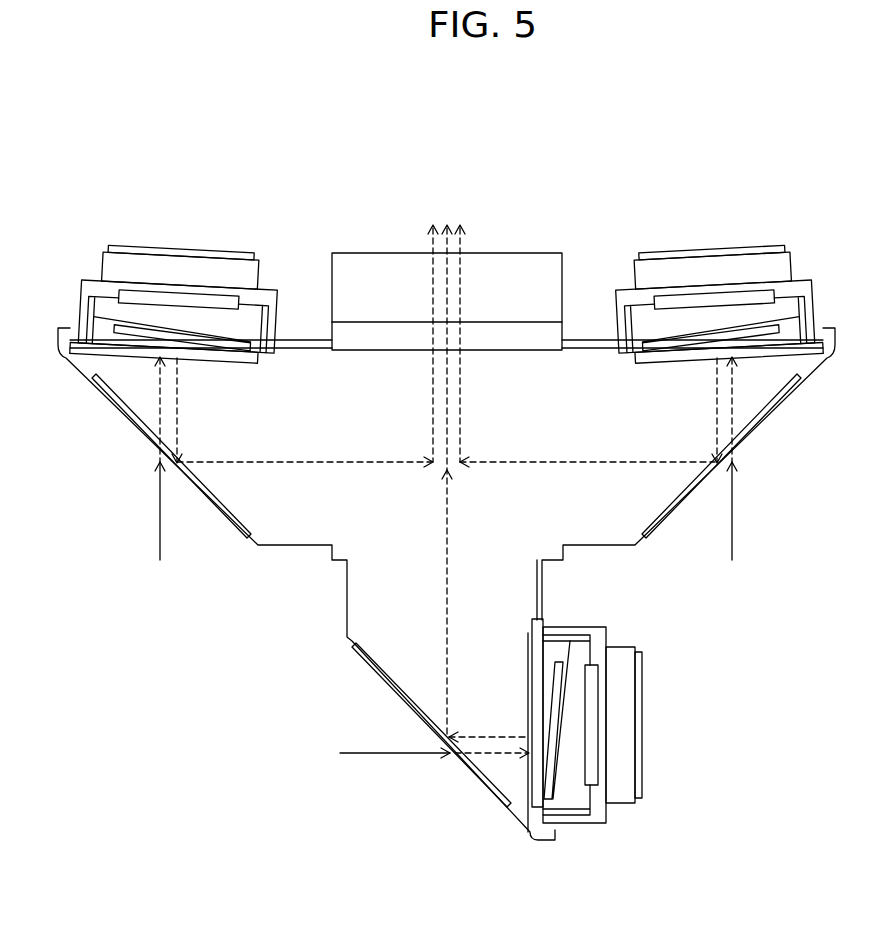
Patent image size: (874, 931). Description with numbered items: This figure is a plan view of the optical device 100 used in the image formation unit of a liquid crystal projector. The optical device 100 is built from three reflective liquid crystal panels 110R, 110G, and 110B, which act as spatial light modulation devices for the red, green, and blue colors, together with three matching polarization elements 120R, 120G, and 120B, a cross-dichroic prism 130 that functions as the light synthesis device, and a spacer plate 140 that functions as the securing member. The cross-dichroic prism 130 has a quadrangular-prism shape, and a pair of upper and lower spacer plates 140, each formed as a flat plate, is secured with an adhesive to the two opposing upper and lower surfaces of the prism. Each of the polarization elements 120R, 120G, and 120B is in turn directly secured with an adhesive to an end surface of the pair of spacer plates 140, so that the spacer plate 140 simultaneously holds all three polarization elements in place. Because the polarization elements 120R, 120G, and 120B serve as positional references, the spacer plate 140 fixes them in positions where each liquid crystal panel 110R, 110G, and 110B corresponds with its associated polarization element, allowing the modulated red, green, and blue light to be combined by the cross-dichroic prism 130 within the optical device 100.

The optical device 100 is at (462, 146).
The reflective liquid crystal panel 110R is at (172, 263).
The reflective liquid crystal panel 110B is at (708, 263).
The reflective liquid crystal panel 110G is at (620, 716).
The polarization element 120R is at (118, 410).
The polarization element 120B is at (775, 410).
The polarization element 120G is at (472, 770).
The cross-dichroic prism 130 is at (407, 268).
The spacer plate 140 is at (362, 606).